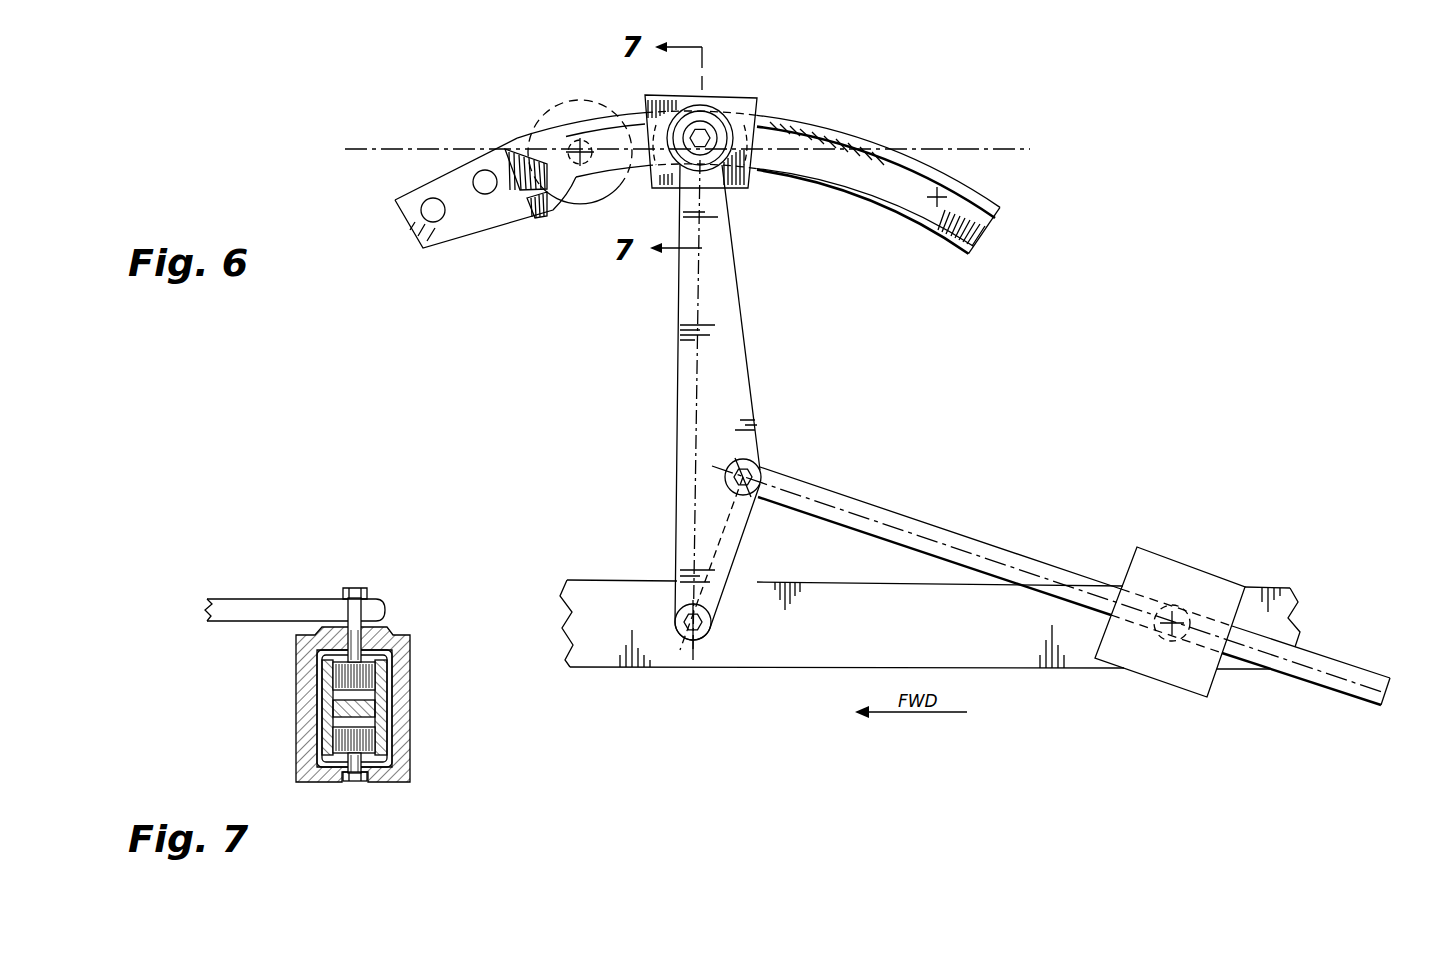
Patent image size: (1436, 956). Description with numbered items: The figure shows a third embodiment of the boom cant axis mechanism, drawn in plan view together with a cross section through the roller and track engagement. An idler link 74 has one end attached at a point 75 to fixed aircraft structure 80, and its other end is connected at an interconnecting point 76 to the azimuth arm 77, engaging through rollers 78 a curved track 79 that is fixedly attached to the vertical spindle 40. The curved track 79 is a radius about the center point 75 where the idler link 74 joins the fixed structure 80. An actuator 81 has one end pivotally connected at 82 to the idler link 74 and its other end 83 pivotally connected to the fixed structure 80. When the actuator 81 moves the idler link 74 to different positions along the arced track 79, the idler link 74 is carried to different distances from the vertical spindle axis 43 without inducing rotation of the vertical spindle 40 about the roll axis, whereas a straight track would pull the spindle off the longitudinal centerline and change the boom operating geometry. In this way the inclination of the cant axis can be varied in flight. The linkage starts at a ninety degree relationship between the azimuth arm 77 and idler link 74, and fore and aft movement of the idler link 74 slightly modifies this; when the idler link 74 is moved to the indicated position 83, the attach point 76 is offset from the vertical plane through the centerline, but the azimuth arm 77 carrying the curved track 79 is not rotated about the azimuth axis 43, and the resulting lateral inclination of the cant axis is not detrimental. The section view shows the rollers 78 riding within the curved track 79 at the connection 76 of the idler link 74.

In FIG. 6, the vertical spindle 40 is at (610, 118).
In FIG. 6, the vertical spindle axis 43 is at (579, 147).
In FIG. 6, the idler link 74 is at (736, 372).
In FIG. 7, the idler link 74 is at (262, 599).
In FIG. 6, the attachment point 75 is at (712, 624).
In FIG. 6, the interconnecting point 76 is at (705, 135).
In FIG. 7, the interconnecting point 76 is at (355, 588).
In FIG. 6, the azimuth arm 77 is at (500, 130).
In FIG. 7, the rollers 78 is at (365, 676).
In FIG. 6, the curved track 79 is at (815, 127).
In FIG. 7, the curved track 79 is at (392, 715).
In FIG. 6, the fixed aircraft structure 80 is at (938, 633).
In FIG. 6, the actuator 81 is at (1013, 552).
In FIG. 6, the pivotal connection 82 is at (762, 470).
In FIG. 6, the actuator end / indicated position 83 is at (948, 193).